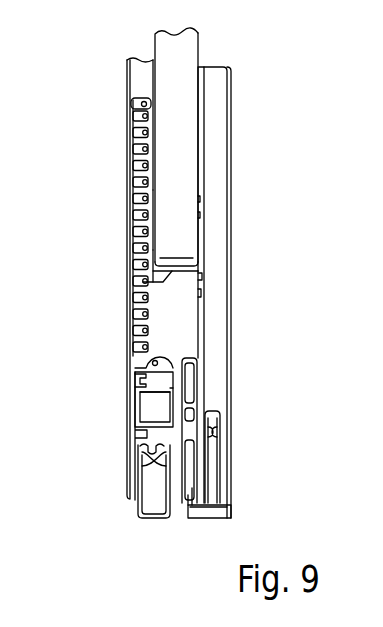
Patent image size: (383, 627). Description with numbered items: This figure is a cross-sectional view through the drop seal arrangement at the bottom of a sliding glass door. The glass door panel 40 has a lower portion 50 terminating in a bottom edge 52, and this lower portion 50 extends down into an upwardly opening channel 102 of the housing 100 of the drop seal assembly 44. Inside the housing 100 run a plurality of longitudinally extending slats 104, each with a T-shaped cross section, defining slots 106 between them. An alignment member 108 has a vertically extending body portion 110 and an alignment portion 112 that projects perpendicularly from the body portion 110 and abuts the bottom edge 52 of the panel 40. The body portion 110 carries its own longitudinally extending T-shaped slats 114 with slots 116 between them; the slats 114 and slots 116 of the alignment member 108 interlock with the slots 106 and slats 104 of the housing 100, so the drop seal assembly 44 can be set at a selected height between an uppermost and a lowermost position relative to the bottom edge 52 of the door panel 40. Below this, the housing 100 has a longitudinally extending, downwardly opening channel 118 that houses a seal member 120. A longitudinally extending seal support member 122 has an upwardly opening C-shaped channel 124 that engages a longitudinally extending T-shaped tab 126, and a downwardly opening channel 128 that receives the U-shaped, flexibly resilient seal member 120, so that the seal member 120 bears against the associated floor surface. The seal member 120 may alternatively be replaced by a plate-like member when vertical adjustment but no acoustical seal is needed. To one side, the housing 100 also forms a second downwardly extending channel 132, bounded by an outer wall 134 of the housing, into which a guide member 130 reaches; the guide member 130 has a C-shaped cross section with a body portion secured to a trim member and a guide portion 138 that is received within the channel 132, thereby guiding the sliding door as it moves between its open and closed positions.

The glass door panel 40 is at (201, 53).
The drop seal assembly 44 is at (78, 176).
The lower portion 50 is at (176, 142).
The bottom edge 52 is at (172, 274).
The housing 100 is at (208, 203).
The bar channel 102 is at (192, 171).
The slats 104 is at (170, 314).
The slots 106 is at (143, 335).
The alignment member 108 is at (159, 235).
The body portion 110 is at (153, 249).
The alignment portion 112 is at (175, 276).
The slats 114 is at (140, 232).
The slots 116 is at (137, 247).
The downwardly opening channel 118 is at (162, 404).
The seal member 120 is at (138, 507).
The seal support member 122 is at (183, 412).
The C-shaped channel 124 is at (148, 383).
The T-shaped tab 126 is at (167, 380).
The downwardly opening channel 128 is at (148, 436).
The guide member 130 is at (206, 525).
The second downwardly extending channel 132 is at (196, 459).
The outer rail 134 is at (222, 482).
The guide portion 138 is at (192, 490).